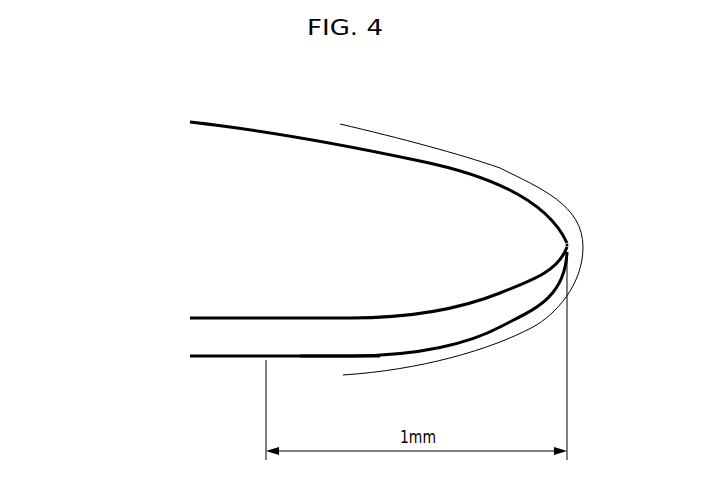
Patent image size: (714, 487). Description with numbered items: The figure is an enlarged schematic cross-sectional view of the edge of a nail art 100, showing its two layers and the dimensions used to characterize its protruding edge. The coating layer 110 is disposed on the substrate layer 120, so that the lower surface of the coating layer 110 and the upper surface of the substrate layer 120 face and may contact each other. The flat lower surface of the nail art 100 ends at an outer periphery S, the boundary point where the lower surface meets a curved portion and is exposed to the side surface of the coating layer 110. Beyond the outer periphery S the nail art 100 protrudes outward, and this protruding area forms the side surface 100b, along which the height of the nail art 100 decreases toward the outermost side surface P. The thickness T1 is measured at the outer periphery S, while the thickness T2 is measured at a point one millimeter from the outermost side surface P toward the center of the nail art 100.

The nail art 100 is at (310, 239).
The coating layer 110 is at (210, 218).
The substrate layer 120 is at (341, 301).
The side surface 100b is at (560, 198).
The outermost side surface P is at (586, 244).
The outer periphery S is at (336, 362).
The thickness at outer periphery T1 is at (342, 151).
The thickness at one millimeter from outermost side surface T2 is at (266, 138).